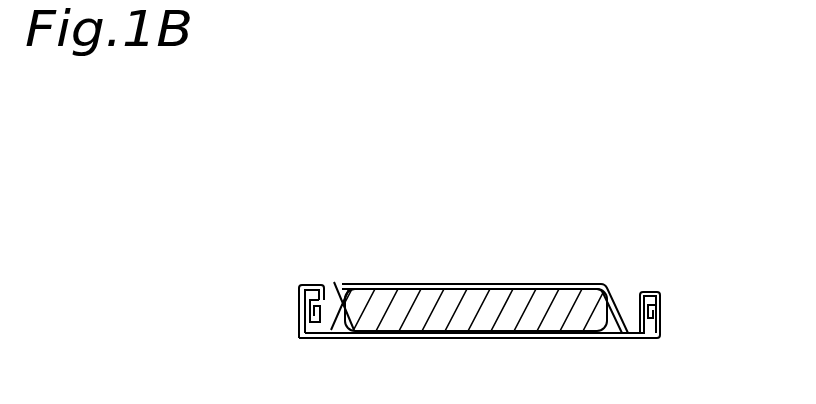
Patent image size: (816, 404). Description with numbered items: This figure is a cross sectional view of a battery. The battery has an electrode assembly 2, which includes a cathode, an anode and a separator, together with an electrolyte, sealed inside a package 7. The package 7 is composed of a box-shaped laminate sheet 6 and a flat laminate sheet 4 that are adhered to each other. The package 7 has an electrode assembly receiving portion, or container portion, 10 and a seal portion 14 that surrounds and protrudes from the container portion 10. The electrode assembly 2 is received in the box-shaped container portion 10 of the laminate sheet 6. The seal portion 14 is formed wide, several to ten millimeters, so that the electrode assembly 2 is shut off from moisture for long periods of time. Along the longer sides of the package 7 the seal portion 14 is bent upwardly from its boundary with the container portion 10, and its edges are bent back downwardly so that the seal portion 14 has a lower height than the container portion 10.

The electrode assembly 2 is at (458, 303).
The flat laminate sheet 4 is at (330, 283).
The box-shaped laminate sheet 6 is at (334, 282).
The package 7 is at (248, 223).
The electrode assembly receiving portion 10 is at (528, 283).
The seal portion 14 is at (649, 292).